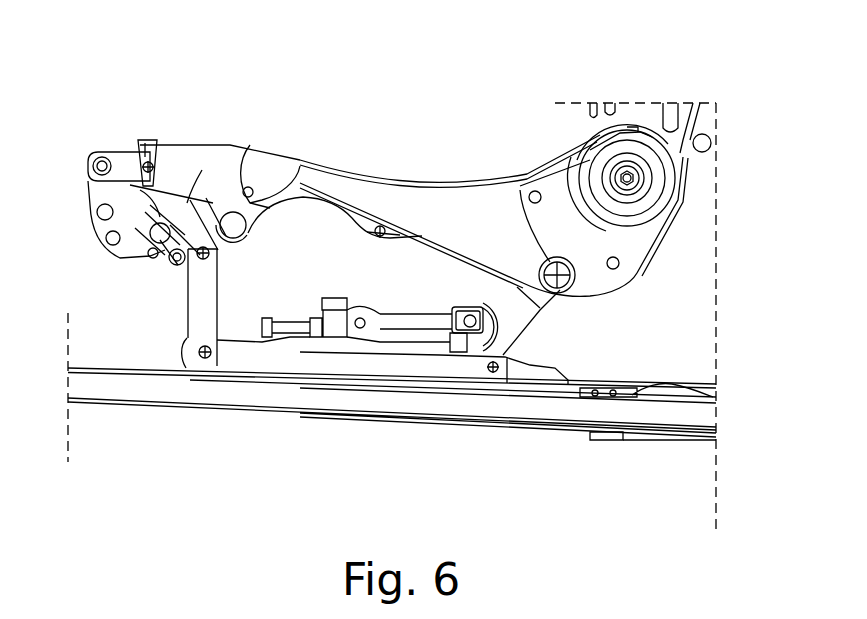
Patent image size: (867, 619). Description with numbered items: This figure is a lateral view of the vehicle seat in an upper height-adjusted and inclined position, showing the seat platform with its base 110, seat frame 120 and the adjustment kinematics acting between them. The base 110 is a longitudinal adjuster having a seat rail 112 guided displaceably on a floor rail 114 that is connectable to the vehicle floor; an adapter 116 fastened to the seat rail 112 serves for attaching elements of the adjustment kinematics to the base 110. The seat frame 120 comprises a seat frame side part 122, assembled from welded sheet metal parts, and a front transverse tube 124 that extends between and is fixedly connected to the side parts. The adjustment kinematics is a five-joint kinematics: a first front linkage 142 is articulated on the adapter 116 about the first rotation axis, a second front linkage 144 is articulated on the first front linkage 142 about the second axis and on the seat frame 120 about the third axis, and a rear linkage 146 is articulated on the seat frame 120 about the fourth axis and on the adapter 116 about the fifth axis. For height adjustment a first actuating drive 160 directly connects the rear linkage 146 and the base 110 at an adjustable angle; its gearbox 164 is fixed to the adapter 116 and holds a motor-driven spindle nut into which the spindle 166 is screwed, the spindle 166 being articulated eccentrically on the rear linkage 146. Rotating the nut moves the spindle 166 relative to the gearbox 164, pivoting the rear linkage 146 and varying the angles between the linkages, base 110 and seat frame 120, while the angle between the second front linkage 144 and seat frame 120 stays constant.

The base 110 is at (435, 430).
The seat rail 112 is at (705, 396).
The floor rail 114 is at (660, 420).
The adapter 116 is at (380, 354).
The seat frame 120 is at (507, 168).
The seat frame side part 122 is at (340, 172).
The front transverse tube 124 is at (245, 200).
The first front linkage 142 is at (188, 300).
The second front linkage 144 is at (150, 245).
The rear linkage 146 is at (540, 303).
The first actuating drive 160 is at (403, 310).
The gearbox 164 is at (335, 298).
The spindle 166 is at (287, 320).